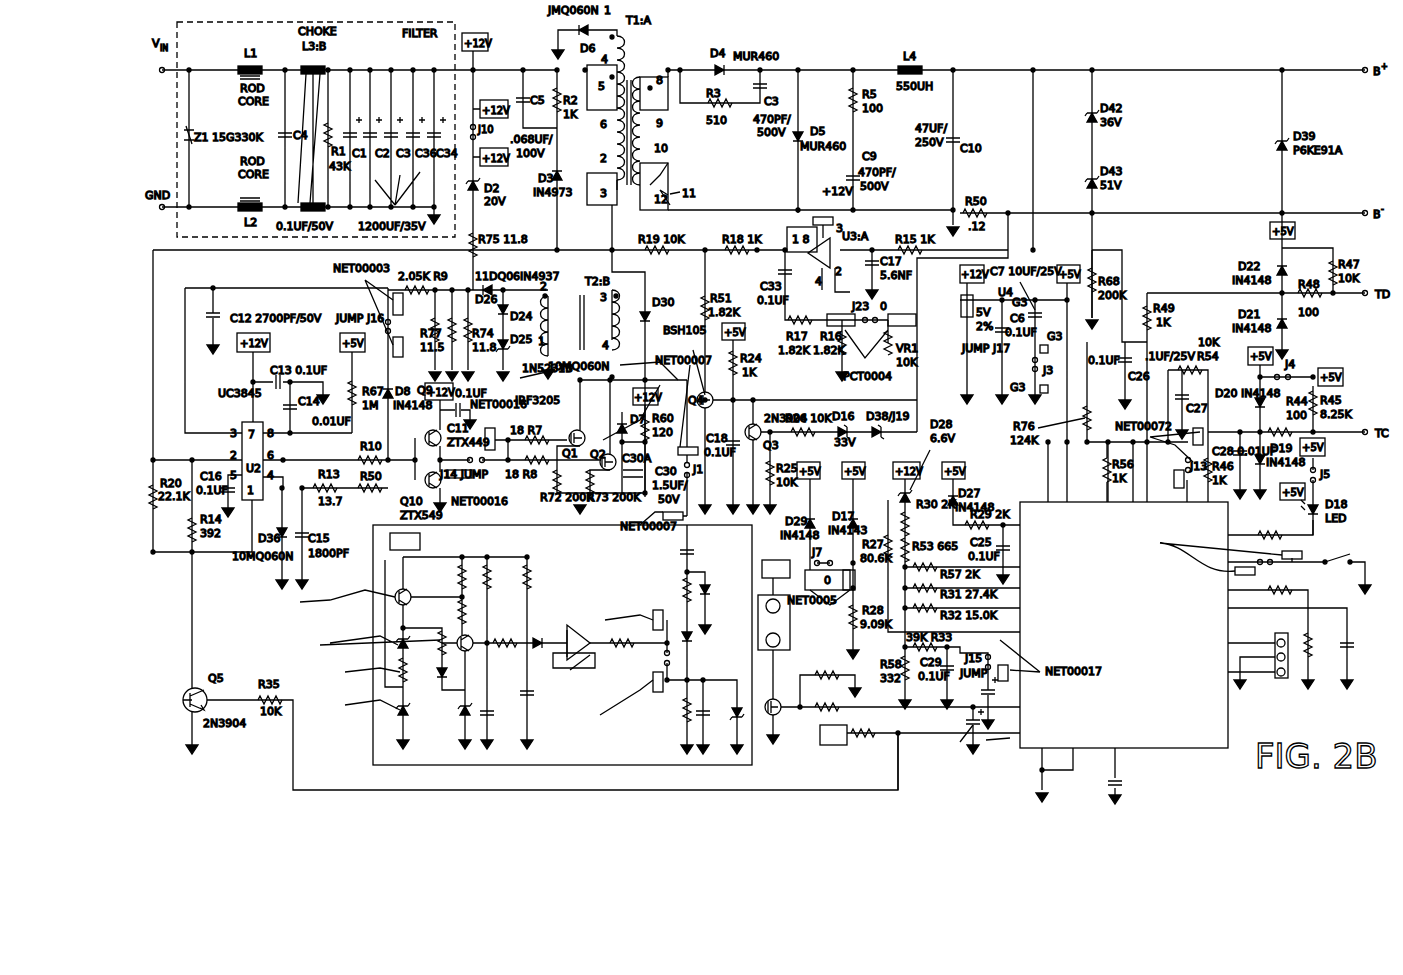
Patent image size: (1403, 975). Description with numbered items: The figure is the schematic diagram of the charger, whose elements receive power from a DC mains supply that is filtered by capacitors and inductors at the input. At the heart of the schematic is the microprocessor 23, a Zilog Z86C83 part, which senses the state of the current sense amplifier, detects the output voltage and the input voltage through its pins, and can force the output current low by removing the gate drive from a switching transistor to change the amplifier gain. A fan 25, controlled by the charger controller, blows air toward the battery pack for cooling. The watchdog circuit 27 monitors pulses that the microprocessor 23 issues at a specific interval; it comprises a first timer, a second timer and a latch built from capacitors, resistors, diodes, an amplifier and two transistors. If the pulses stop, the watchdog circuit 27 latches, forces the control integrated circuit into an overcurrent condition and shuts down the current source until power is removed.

The microprocessor 23 is at (1213, 748).
The fan 25 is at (765, 695).
The watchdog circuit 27 is at (373, 758).